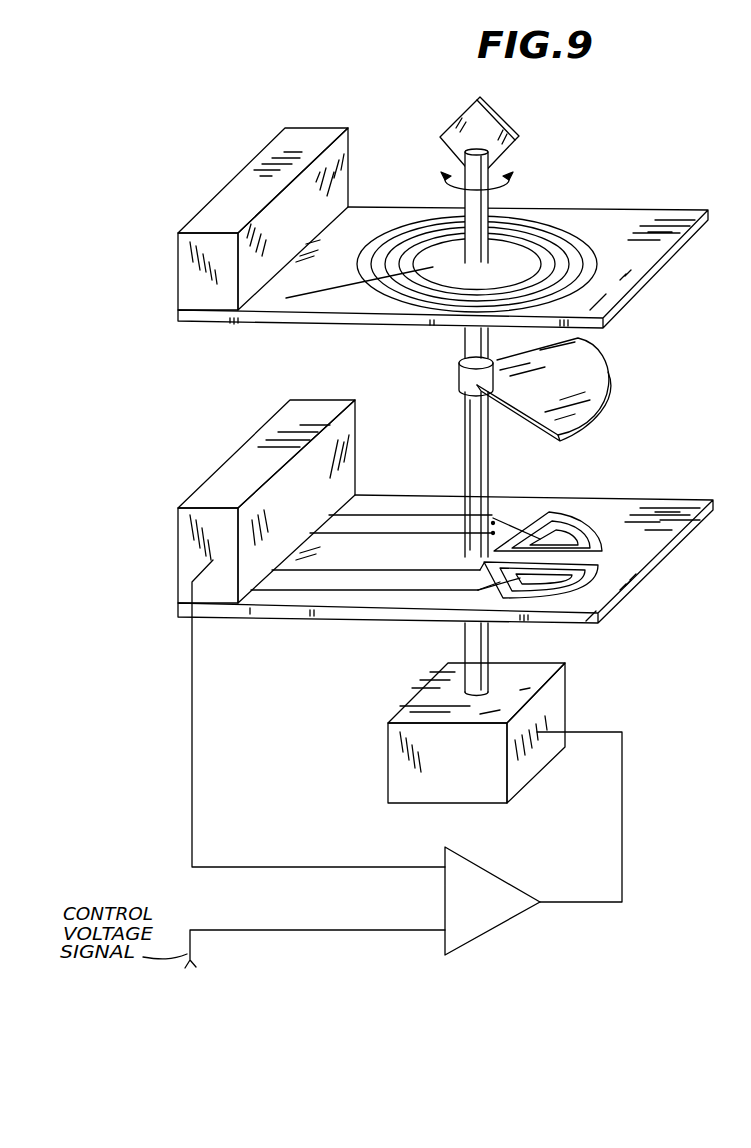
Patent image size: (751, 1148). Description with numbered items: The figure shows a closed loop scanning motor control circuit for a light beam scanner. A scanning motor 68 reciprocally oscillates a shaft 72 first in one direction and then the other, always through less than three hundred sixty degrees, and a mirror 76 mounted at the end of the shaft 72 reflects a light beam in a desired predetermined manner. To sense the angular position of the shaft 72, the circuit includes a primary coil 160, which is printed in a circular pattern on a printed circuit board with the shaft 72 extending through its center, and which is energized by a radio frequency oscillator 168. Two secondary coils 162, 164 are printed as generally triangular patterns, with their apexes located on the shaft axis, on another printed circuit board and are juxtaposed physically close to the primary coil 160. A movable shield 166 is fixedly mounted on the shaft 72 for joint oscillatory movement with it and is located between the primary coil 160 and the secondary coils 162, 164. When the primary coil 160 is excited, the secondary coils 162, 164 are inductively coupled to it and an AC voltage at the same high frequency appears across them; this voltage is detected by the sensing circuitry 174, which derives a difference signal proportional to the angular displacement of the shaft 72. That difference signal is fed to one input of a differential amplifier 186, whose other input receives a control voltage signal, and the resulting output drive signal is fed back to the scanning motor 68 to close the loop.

The radio frequency oscillator 168 is at (282, 135).
The primary coil 160 is at (604, 256).
The mirror 76 is at (487, 126).
The shaft 72 is at (489, 641).
The movable shield 166 is at (611, 373).
The sensing circuitry 174 is at (249, 447).
The secondary coil 162 is at (584, 511).
The secondary coil 164 is at (600, 577).
The scanning motor 68 is at (388, 723).
The differential amplifier 186 is at (502, 884).